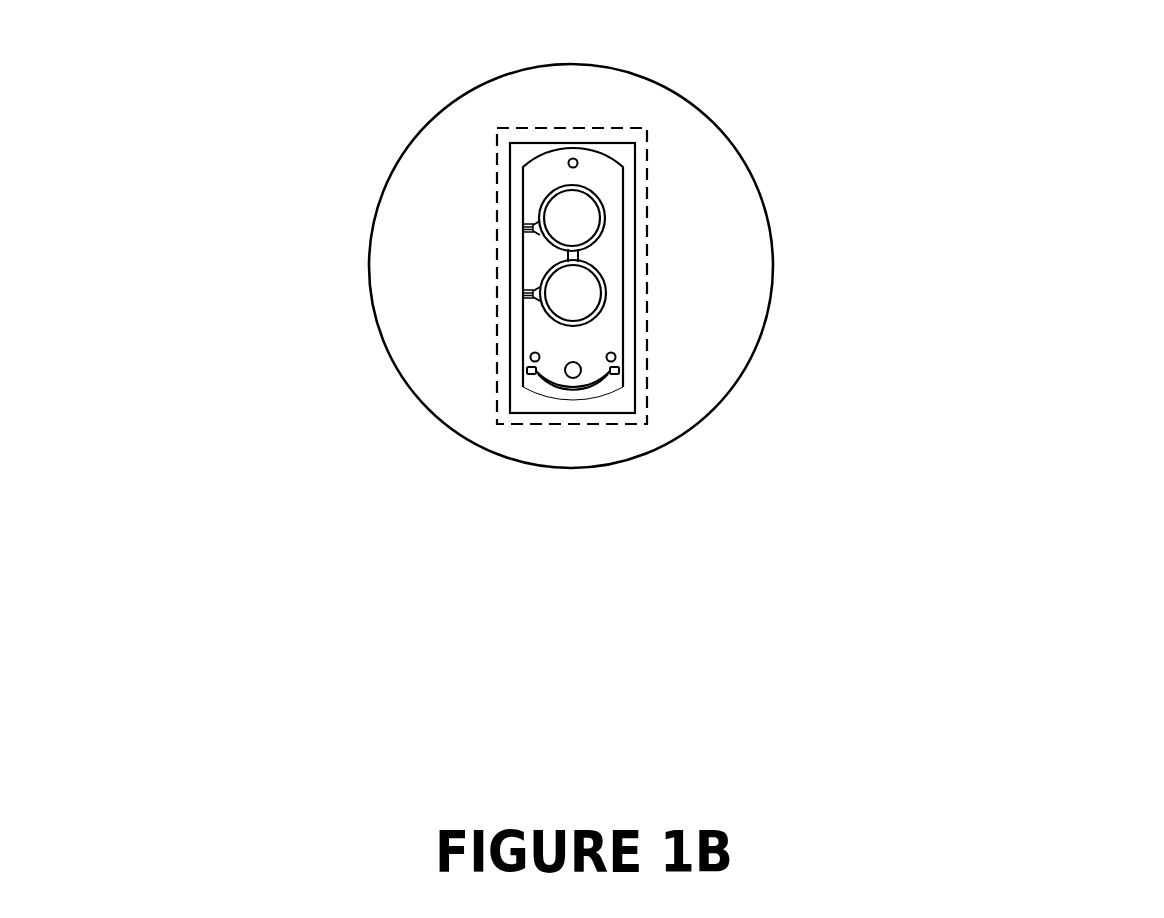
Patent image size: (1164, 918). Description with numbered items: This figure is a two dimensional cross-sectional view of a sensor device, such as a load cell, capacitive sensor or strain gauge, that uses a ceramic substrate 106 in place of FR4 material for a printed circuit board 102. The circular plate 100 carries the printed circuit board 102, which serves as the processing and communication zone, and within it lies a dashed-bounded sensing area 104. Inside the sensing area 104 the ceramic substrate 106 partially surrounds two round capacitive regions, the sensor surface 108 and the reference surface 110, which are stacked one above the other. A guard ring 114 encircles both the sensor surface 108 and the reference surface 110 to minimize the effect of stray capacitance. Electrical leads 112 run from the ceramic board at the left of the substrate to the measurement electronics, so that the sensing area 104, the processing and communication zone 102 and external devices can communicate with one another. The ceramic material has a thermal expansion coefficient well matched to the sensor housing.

The plate 100 is at (720, 404).
The printed circuit board (processing and communication zone) 102 is at (563, 466).
The sensing area 104 is at (573, 128).
The ceramic substrate 106 is at (606, 337).
The sensor surface 108 is at (588, 217).
The reference surface 110 is at (590, 294).
The electrical leads 112 is at (520, 230).
The guard ring 114 is at (595, 268).